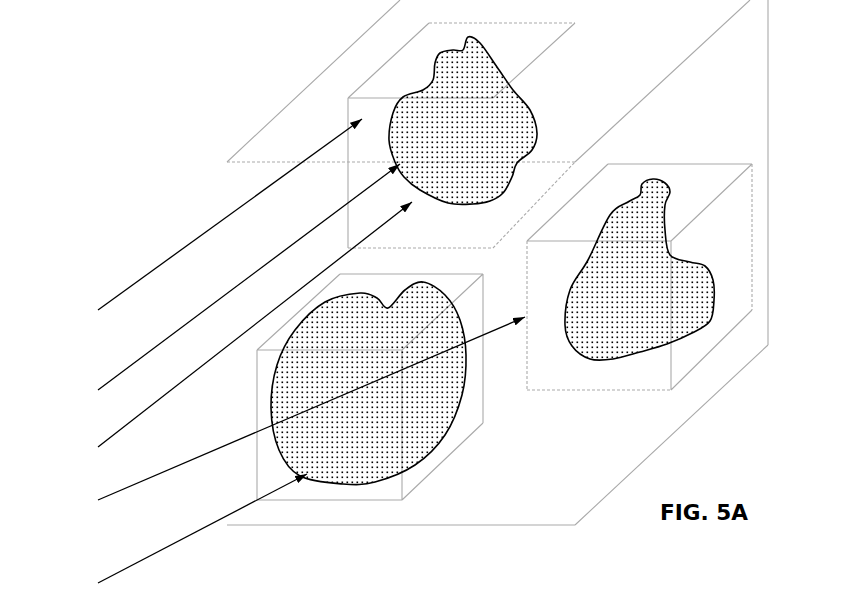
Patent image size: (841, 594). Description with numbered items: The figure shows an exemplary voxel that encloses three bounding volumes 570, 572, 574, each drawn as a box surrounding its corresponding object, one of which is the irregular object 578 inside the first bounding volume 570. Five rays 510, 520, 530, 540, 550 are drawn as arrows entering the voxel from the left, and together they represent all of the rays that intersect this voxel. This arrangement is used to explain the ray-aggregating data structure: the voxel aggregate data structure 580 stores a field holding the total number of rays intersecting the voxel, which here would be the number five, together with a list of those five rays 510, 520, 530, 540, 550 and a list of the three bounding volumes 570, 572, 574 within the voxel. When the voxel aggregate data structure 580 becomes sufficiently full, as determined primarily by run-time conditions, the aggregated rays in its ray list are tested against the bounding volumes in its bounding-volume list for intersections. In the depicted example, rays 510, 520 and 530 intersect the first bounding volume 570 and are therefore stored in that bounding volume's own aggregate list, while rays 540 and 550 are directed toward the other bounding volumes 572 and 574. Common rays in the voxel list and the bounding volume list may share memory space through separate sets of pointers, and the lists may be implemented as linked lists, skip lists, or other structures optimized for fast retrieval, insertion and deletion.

The ray 510 is at (230, 214).
The ray 520 is at (249, 277).
The ray 530 is at (255, 324).
The ray 540 is at (311, 416).
The ray 550 is at (202, 529).
The bounding volume 570 is at (572, 50).
The bounding volume 572 is at (677, 160).
The bounding volume 574 is at (466, 440).
The light-sensitive material volume 578 is at (527, 107).
The voxel aggregate data structure 580 is at (509, 297).